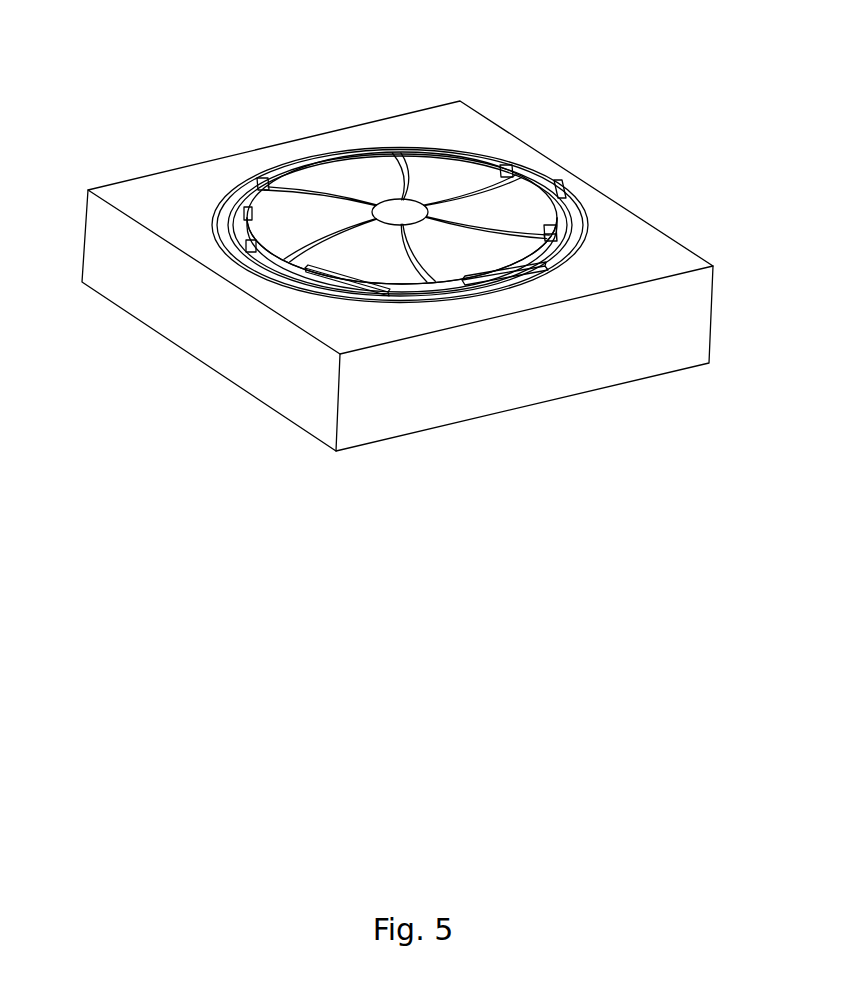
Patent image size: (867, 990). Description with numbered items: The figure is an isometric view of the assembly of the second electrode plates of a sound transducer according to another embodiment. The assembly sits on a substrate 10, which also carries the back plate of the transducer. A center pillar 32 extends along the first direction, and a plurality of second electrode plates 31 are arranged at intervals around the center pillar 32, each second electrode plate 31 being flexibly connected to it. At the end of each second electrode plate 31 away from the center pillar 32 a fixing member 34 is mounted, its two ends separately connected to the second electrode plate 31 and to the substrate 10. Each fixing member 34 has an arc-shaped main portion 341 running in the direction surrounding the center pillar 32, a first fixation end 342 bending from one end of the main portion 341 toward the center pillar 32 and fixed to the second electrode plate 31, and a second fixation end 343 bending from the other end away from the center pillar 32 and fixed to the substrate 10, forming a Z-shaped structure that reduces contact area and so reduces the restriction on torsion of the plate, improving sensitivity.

The substrate 10 is at (163, 210).
The second electrode plate 31 is at (332, 180).
The center pillar 32 is at (403, 200).
The fixing member 34 is at (458, 66).
The main portion 341 is at (560, 190).
The first fixation end 342 is at (550, 232).
The second fixation end 343 is at (570, 172).